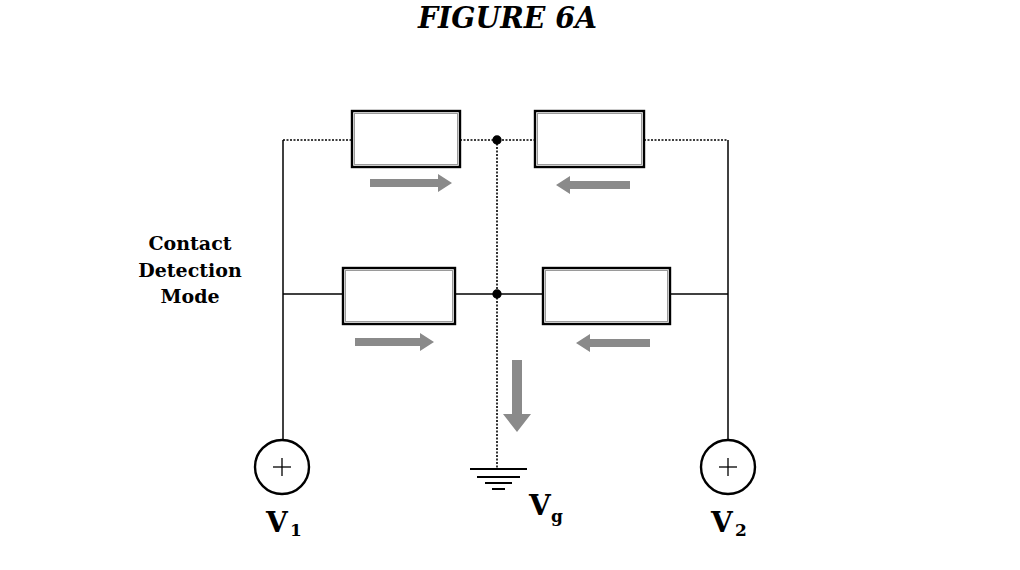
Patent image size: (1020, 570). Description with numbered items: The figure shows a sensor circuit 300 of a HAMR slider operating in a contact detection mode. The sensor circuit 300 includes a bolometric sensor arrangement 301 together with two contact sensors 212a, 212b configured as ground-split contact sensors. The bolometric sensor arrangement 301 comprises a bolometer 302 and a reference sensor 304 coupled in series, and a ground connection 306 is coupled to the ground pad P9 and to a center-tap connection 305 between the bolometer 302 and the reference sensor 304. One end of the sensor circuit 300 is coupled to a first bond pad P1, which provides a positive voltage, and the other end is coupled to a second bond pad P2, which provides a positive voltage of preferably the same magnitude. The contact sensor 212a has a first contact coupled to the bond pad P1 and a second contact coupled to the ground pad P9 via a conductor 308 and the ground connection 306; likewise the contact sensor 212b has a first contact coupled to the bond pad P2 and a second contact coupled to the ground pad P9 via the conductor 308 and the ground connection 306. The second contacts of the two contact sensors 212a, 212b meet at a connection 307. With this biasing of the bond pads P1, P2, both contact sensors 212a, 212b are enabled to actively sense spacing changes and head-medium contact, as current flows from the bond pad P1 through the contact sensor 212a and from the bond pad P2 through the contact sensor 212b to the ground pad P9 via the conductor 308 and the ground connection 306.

The sensor circuit 300 is at (263, 126).
The bolometric sensor arrangement 301 is at (752, 234).
The contact sensor 212a is at (405, 111).
The contact sensor 212b is at (595, 111).
The bolometer 302 is at (602, 268).
The reference sensor 304 is at (393, 268).
The connection 305 is at (498, 296).
The ground connection 306 is at (497, 445).
The connection 307 is at (498, 142).
The conductor 308 is at (497, 245).
The bond pad P1 is at (310, 467).
The bond pad P2 is at (702, 462).
The ground pad P9 is at (485, 479).